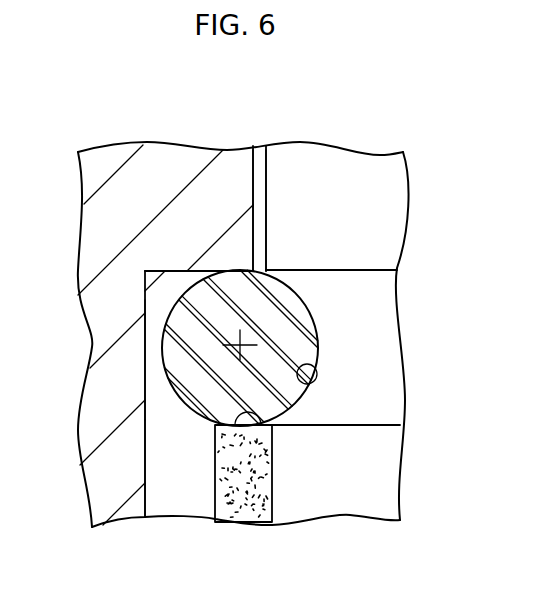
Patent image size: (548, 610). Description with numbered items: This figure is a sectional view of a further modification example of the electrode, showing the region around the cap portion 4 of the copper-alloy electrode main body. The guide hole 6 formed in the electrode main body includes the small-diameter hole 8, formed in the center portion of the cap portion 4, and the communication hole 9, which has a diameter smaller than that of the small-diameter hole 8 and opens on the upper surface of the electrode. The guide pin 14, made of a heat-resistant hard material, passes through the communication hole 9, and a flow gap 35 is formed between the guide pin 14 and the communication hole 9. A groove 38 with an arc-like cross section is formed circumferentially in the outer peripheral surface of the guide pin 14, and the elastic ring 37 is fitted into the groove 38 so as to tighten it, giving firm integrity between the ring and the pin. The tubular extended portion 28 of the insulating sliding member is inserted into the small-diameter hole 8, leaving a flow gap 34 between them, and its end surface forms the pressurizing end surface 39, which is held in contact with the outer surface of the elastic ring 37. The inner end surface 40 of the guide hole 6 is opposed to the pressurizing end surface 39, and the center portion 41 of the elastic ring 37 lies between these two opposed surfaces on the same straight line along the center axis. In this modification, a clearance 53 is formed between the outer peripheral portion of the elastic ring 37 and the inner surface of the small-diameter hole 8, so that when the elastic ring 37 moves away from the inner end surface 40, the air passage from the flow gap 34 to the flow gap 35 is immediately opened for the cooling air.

The cap portion 4 is at (103, 228).
The guide hole 6 is at (196, 505).
The small-diameter hole 8 is at (145, 462).
The communication hole 9 is at (256, 167).
The guide pin 14 is at (383, 202).
The extended portion 28 is at (250, 487).
The flow gap 34 is at (165, 500).
The flow gap 35 is at (266, 224).
The elastic ring 37 is at (312, 297).
The groove 38 is at (383, 357).
The pressurizing end surface 39 is at (262, 425).
The inner end surface 40 is at (160, 274).
The center portion 41 is at (240, 345).
The clearance 53 is at (153, 351).